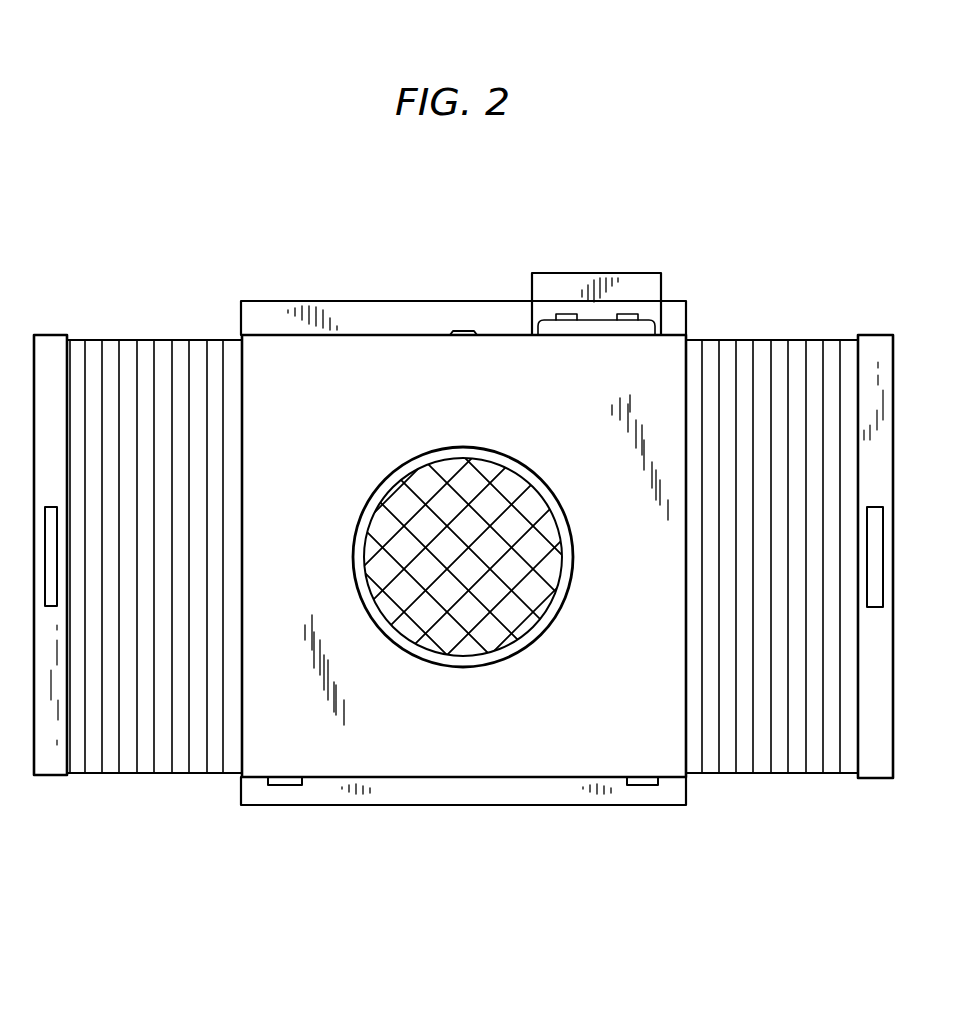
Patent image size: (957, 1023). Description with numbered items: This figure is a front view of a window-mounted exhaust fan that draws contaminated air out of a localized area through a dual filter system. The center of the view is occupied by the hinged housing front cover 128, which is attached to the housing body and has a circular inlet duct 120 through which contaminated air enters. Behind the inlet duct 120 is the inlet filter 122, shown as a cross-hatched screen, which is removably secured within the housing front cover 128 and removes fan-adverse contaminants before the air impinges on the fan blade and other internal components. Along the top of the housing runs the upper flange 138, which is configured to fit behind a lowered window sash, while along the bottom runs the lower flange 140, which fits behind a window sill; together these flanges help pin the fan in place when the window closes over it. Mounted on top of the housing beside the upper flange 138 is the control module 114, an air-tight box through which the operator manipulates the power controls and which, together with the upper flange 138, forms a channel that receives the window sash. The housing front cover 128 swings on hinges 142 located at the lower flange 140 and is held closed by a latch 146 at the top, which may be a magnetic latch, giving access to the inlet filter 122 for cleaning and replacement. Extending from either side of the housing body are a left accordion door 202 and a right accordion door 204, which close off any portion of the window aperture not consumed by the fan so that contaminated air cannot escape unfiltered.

The control module 114 is at (630, 282).
The inlet duct 120 is at (525, 643).
The inlet filter 122 is at (413, 494).
The housing front cover 128 is at (268, 357).
The upper flange 138 is at (357, 310).
The lower flange 140 is at (466, 792).
The hinge 142 is at (281, 786).
The latch 146 is at (463, 331).
The left accordion door 202 is at (143, 774).
The right accordion door 204 is at (778, 774).